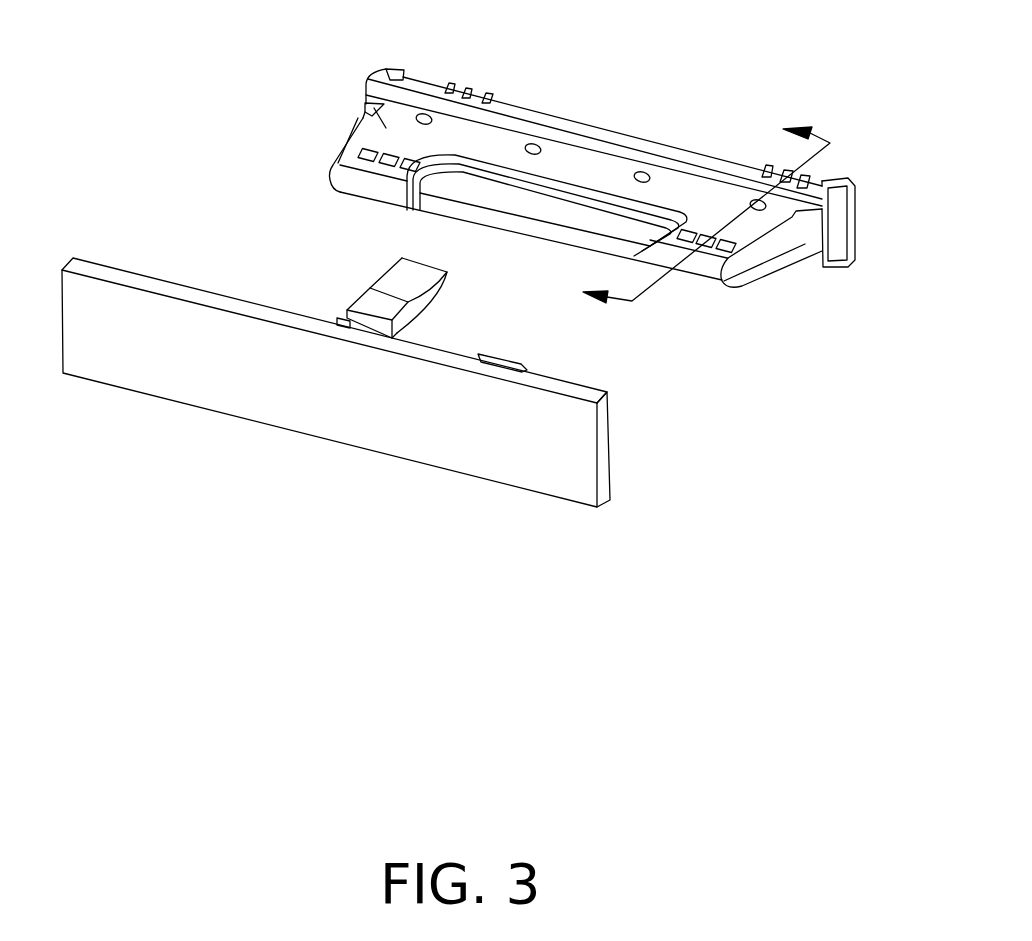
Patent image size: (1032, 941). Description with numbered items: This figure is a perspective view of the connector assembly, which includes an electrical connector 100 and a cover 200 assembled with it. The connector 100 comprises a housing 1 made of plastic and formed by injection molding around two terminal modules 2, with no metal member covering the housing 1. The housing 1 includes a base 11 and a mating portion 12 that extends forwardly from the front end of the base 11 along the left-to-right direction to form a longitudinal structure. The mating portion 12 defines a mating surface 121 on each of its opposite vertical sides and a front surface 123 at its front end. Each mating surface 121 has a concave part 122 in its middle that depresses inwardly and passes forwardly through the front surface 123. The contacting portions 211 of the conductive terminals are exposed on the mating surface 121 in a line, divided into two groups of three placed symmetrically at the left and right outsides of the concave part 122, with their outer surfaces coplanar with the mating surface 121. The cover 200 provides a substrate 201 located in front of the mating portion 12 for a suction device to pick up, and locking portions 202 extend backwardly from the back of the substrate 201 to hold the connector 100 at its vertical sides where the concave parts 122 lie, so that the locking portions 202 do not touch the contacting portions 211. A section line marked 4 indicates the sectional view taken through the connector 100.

The electrical connector 100 is at (386, 70).
The housing 1 is at (843, 225).
The base 11 is at (618, 133).
The mating portion 12 is at (773, 250).
The mating surface 121 is at (363, 110).
The concave part 122 is at (540, 207).
The front surface 123 is at (362, 180).
The terminal module 2 is at (490, 95).
The contacting portion 211 is at (731, 248).
The section line 4- 4 is at (699, 216).
The cover 200 is at (478, 457).
The substrate 201 is at (604, 440).
The locking portion 202 is at (402, 278).